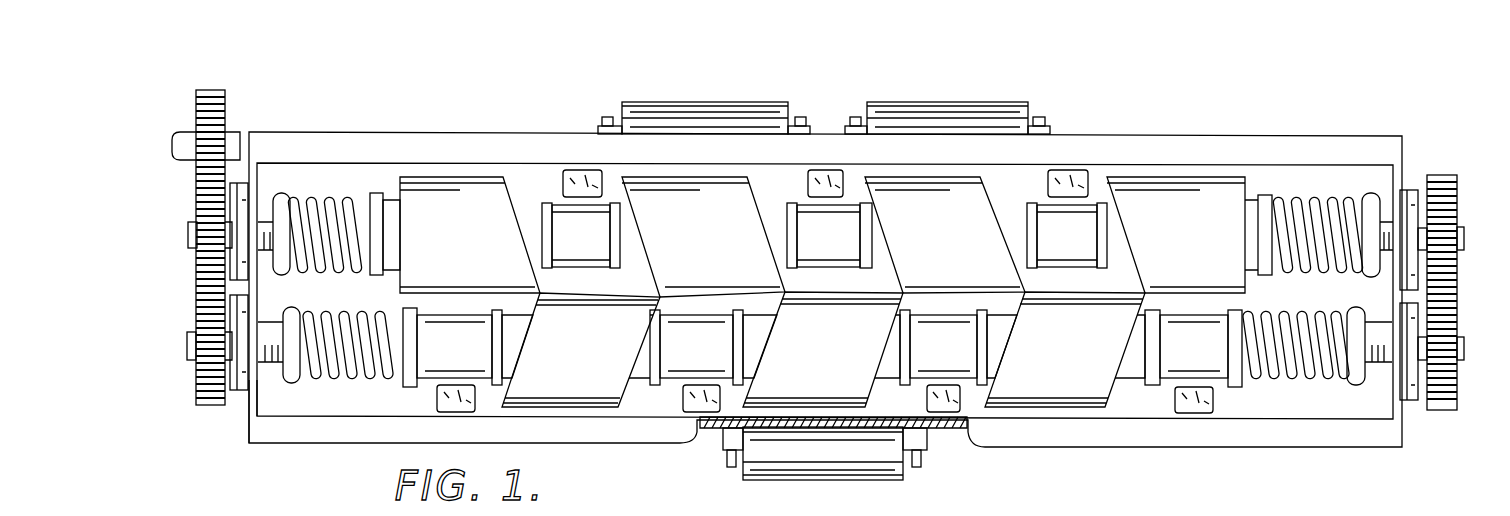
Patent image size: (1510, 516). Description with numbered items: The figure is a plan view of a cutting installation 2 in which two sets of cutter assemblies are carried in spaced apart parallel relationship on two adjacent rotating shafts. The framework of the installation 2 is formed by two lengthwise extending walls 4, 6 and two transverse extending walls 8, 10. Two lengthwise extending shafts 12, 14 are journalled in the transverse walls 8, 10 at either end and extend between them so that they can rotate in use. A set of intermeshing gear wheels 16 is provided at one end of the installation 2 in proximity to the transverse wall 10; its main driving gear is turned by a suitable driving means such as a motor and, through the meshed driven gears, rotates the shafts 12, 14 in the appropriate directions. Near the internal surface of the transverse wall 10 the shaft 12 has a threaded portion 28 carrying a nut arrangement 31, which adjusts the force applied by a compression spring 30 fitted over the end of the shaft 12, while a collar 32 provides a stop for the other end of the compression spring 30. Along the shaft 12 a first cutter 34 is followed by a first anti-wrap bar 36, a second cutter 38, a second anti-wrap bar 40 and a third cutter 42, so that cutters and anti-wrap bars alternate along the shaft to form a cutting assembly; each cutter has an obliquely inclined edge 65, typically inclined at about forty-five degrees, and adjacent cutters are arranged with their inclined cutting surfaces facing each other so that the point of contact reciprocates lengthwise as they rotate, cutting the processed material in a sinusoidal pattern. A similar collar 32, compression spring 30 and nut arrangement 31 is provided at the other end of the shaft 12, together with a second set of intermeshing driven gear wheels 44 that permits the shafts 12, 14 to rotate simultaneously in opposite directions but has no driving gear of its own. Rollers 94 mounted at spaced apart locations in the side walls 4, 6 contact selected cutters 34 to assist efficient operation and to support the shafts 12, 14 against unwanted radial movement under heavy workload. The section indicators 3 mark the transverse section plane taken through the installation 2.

The installation 2 is at (183, 95).
The section line 3 is at (705, 102).
The lengthwise extending wall 4 is at (582, 186).
The lengthwise extending wall 6 is at (1327, 425).
The transverse extending wall 8 is at (1402, 155).
The transverse extending wall 10 is at (253, 397).
The shaft 12 is at (310, 205).
The shaft 14 is at (325, 347).
The set of intermeshing gear wheels 16 is at (212, 404).
The threaded portion 28 is at (266, 190).
The compression spring 30 is at (330, 203).
The nut arrangement 31 is at (1368, 197).
The collar 32 is at (379, 190).
The first cutter 34 is at (472, 254).
The first anti-wrap bar 36 is at (565, 227).
The second cutter 38 is at (715, 254).
The second anti-wrap bar 40 is at (882, 222).
The third cutter 42 is at (957, 254).
The second set of intermeshing driven gear wheels 44 is at (1445, 176).
The edge 65 is at (483, 190).
The rollers 94 is at (870, 102).